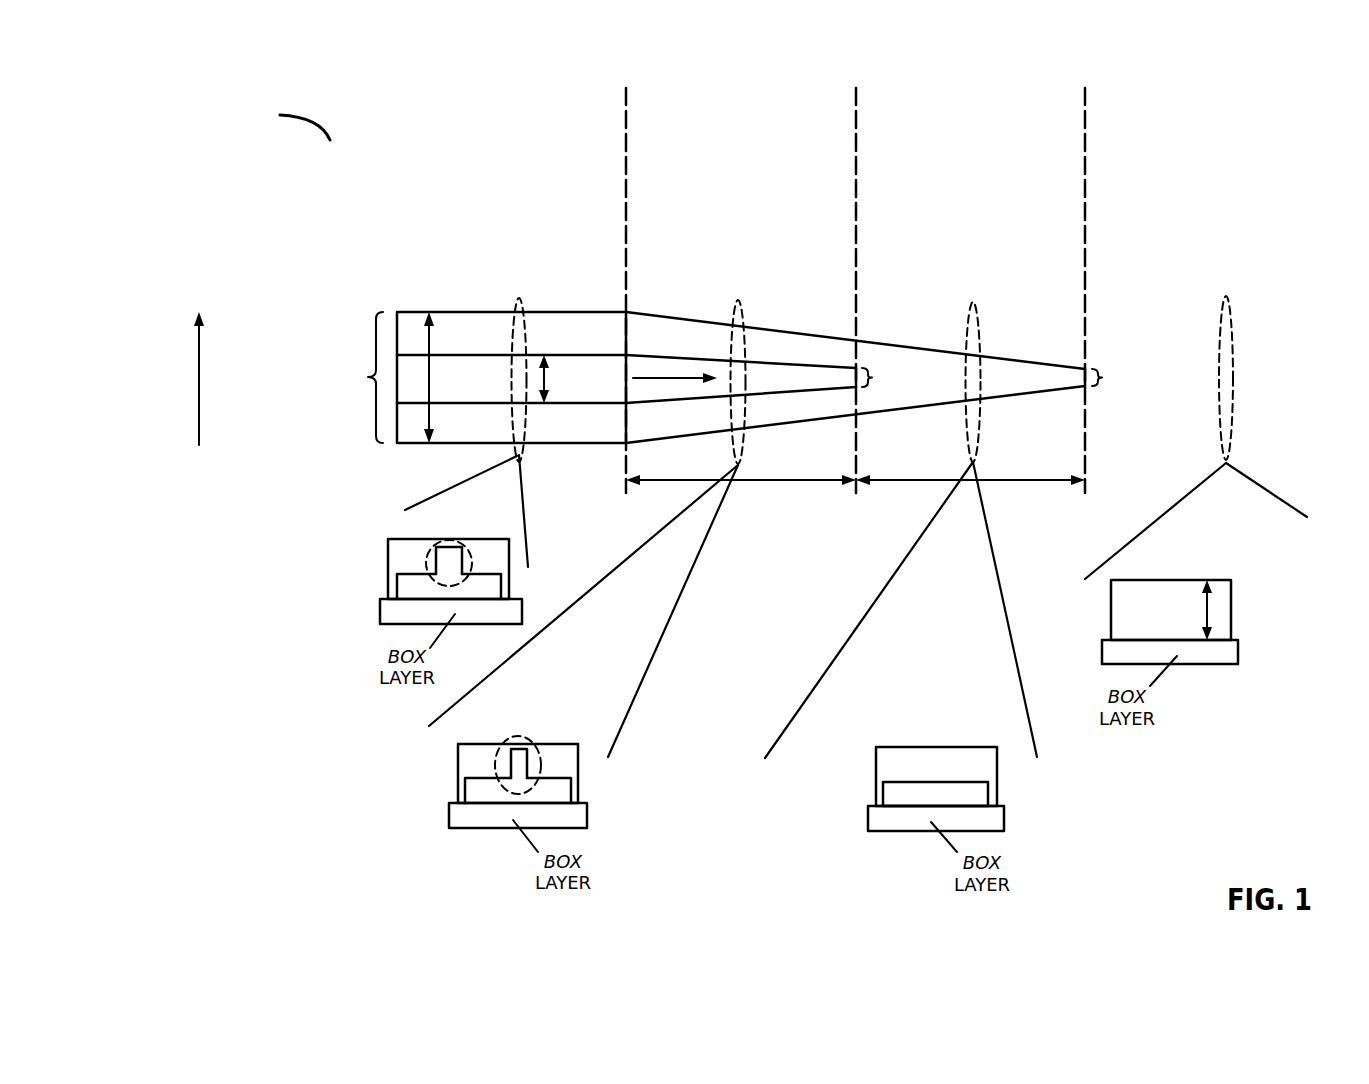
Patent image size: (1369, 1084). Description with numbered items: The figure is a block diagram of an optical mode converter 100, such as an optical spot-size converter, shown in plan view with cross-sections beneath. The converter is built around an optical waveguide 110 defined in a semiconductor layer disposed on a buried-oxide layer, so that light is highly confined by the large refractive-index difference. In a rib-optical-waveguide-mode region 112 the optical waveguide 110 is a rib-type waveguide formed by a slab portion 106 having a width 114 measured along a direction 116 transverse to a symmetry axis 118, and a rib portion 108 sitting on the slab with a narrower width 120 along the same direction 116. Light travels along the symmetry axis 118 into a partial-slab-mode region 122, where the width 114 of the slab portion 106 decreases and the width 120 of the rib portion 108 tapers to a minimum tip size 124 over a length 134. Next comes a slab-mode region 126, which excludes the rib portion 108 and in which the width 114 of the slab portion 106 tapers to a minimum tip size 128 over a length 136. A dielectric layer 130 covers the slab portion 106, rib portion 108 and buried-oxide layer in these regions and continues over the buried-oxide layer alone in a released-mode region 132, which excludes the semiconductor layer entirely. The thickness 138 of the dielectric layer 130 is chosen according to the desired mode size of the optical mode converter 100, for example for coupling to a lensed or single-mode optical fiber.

The optical mode converter 100 is at (243, 114).
The slab portion 106 is at (412, 586).
The rib portion 108 is at (538, 748).
The optical waveguide 110 is at (666, 377).
The rib-optical-waveguide-mode region 112 is at (544, 290).
The width 114 is at (432, 390).
The direction 116 is at (199, 403).
The symmetry axis 118 is at (663, 377).
The width 120 is at (545, 387).
The partial-slab-mode region 122 is at (769, 290).
The minimum tip size 124 is at (904, 376).
The slab-mode region 126 is at (1002, 290).
The minimum tip size 128 is at (1135, 376).
The dielectric layer 130 is at (400, 564).
The released-mode region 132 is at (1203, 167).
The length 134 is at (830, 477).
The length 136 is at (883, 477).
The thickness 138 is at (1208, 607).